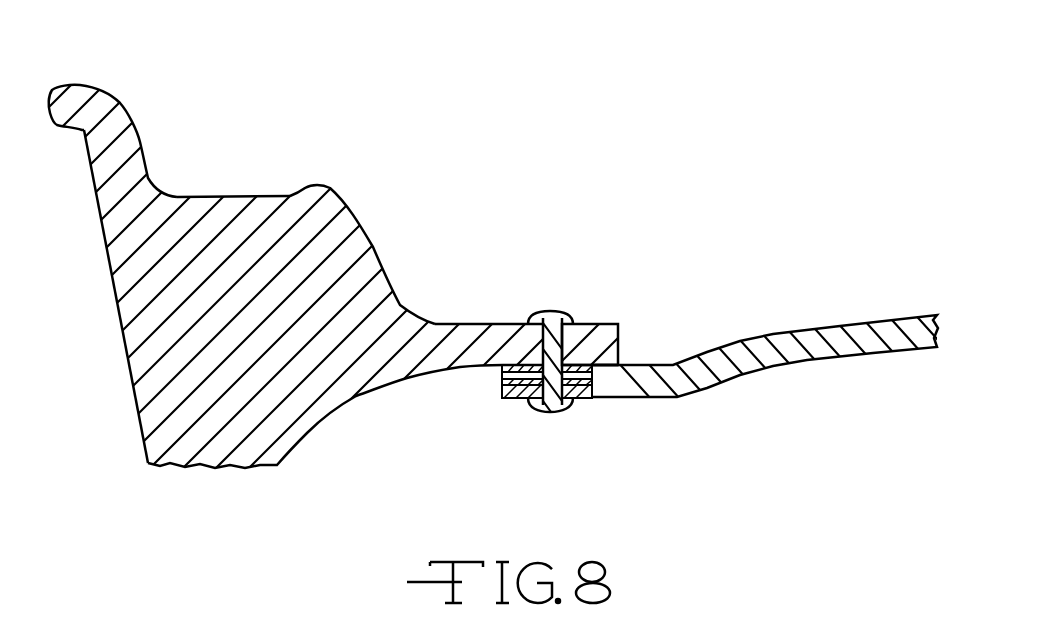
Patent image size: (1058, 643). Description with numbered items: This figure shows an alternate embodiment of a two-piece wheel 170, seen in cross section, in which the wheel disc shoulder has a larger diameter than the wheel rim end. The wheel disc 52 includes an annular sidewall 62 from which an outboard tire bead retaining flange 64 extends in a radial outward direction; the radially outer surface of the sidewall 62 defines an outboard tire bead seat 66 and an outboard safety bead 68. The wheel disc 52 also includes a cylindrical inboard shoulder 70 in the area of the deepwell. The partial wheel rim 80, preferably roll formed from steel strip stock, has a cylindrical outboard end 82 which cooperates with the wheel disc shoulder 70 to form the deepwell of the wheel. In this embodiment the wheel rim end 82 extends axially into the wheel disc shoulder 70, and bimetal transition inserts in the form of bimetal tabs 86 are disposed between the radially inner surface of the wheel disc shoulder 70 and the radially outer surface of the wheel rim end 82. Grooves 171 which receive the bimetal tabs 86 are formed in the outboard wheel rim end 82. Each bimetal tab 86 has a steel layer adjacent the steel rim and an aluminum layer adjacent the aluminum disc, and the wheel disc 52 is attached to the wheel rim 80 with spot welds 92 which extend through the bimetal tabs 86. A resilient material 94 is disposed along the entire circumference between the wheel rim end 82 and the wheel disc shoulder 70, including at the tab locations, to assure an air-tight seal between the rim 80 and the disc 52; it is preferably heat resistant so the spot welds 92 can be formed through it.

The wheel 170 is at (287, 72).
The wheel disc 52 is at (108, 318).
The annular sidewall 62 is at (130, 402).
The outboard tire bead retaining flange 64 is at (140, 140).
The outboard tire bead seat 66 is at (212, 197).
The outboard safety bead 68 is at (332, 188).
The inboard shoulder 70 is at (597, 327).
The wheel rim 80 is at (765, 340).
The outboard end 82 is at (605, 390).
The bimetal tabs 86 is at (490, 375).
The spot welds 92 is at (552, 315).
The resilient material 94 is at (637, 327).
The grooves 171 is at (507, 400).